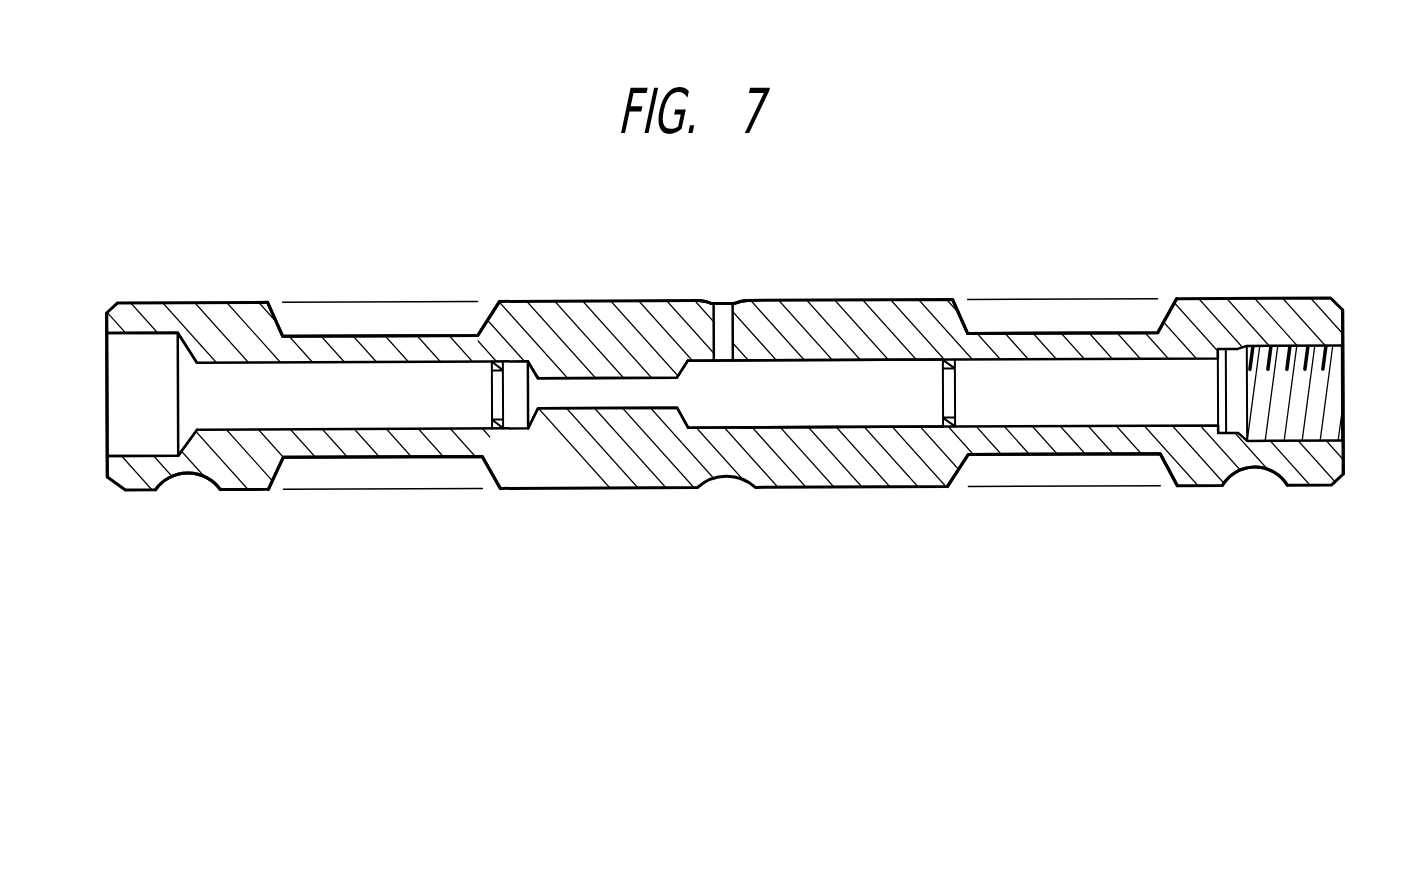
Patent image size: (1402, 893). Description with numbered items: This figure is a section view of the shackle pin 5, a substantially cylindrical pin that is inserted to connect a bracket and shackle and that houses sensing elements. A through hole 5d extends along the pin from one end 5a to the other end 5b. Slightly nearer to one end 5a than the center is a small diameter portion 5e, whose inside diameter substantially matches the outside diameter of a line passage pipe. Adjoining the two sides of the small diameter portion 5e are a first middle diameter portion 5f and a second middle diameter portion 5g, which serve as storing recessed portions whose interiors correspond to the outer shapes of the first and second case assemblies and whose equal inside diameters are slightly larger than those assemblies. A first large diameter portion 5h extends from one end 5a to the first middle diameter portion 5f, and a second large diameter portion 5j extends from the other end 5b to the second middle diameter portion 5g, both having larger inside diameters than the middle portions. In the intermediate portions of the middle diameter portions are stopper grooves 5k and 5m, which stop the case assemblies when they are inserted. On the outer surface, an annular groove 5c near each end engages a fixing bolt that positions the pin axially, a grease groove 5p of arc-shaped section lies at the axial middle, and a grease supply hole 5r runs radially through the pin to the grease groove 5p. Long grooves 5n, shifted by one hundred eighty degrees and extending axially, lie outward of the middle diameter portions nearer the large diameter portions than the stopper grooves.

The shackle pin 5 is at (621, 303).
The one end 5a is at (102, 480).
The other end 5b is at (1348, 478).
The annular groove 5c is at (205, 488).
The through hole 5d is at (789, 441).
The small diameter portion 5e is at (618, 396).
The first middle diameter portion 5f is at (519, 418).
The second middle diameter portion 5g is at (823, 420).
The first large diameter portion 5h is at (158, 336).
The second large diameter portion 5j is at (1294, 438).
The stopper groove 5k is at (488, 418).
The stopper groove 5m is at (947, 434).
The long groove 5n is at (285, 330).
The grease groove 5p is at (736, 303).
The grease supply hole 5r is at (716, 305).